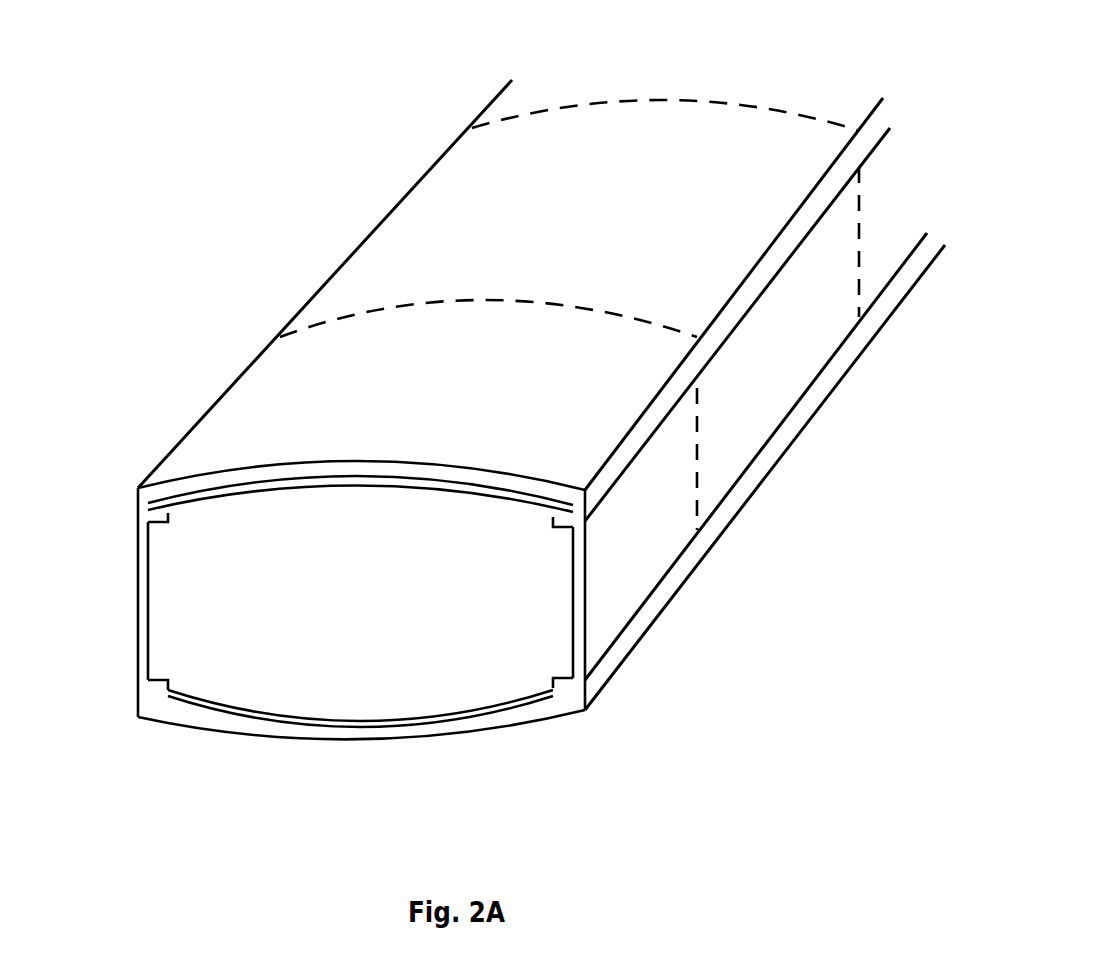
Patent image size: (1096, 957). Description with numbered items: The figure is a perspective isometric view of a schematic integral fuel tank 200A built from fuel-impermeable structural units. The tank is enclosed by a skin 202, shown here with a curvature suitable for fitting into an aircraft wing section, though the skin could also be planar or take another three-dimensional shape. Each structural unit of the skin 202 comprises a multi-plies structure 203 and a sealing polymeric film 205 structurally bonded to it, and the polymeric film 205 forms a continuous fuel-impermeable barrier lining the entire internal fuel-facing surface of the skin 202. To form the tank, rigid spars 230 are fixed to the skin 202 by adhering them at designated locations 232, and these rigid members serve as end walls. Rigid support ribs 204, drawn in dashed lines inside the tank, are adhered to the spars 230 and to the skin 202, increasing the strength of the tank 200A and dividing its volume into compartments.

The fuel tank 200A is at (196, 86).
The tank skin 202 is at (270, 387).
The multi-plies structure 203 is at (260, 730).
The support rib 204 is at (738, 108).
The sealing polymeric film 205 is at (335, 718).
The rigid spar 230 is at (140, 590).
The adhering location 232 is at (153, 515).